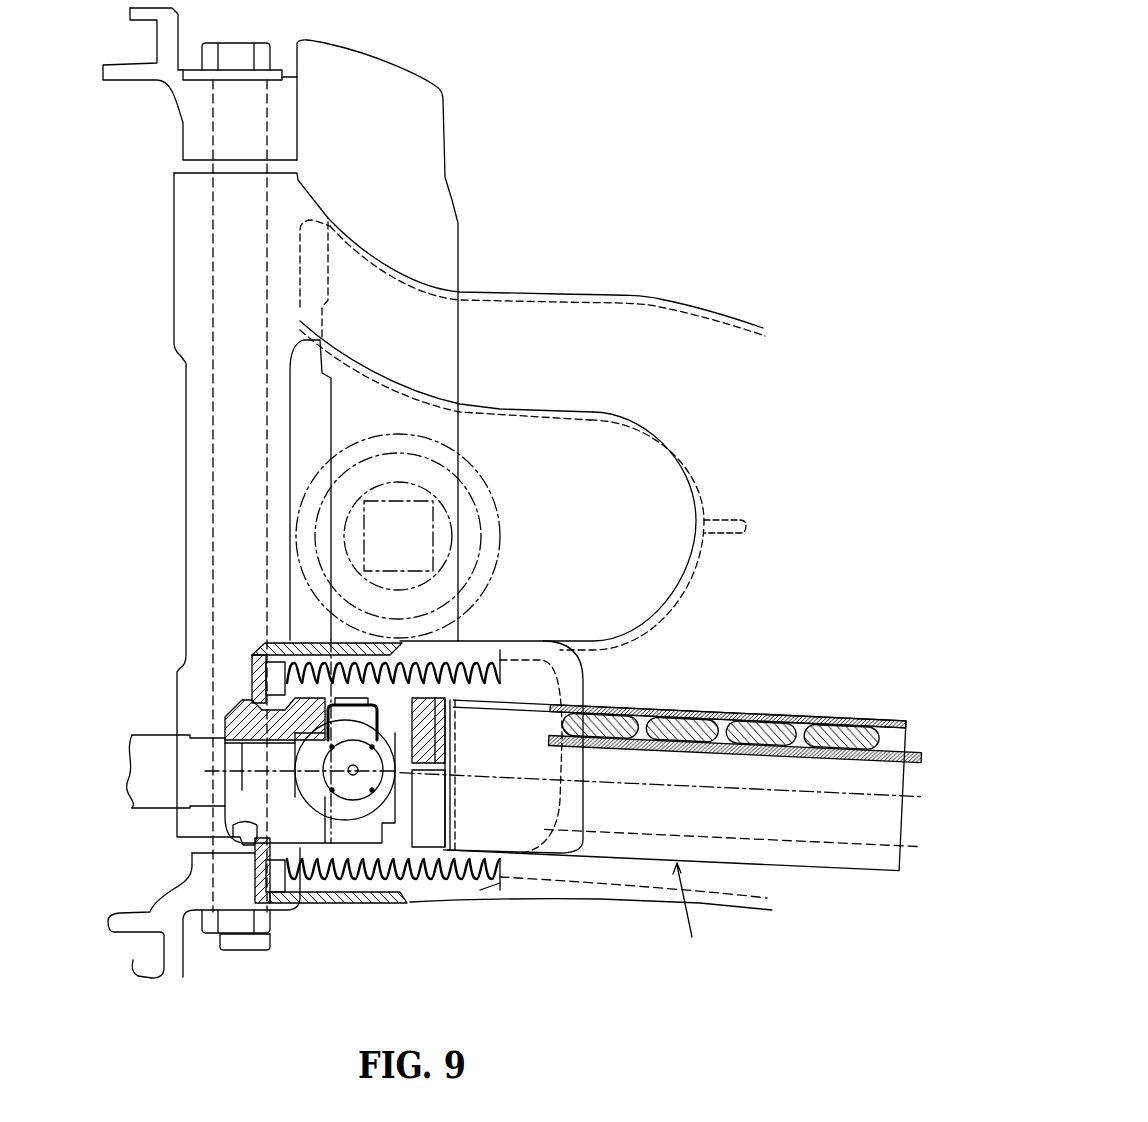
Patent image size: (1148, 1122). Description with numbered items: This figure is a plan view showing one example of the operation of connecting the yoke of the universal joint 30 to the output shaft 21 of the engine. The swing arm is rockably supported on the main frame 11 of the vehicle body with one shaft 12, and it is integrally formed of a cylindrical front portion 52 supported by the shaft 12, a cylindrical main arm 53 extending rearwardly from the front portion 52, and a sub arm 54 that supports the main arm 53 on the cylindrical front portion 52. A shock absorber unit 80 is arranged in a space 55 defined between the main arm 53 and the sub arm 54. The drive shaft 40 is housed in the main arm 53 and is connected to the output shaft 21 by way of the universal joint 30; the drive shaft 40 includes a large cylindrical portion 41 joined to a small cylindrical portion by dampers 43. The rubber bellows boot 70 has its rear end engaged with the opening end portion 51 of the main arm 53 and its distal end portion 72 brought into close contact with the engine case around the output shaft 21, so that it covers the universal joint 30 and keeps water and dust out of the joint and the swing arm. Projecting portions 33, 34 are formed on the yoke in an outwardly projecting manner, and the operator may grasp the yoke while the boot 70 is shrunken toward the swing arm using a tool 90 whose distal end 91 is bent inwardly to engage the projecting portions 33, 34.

The main frame 11 is at (370, 85).
The shaft 12 is at (208, 202).
The output shaft 21 is at (157, 747).
The universal joint 30 is at (400, 887).
The projecting portion 33 is at (237, 707).
The projecting portion 34 is at (247, 852).
The drive shaft 40 is at (691, 912).
The large cylindrical portion 41 is at (598, 860).
The dampers 43 is at (830, 723).
The end portion 51 is at (500, 855).
The cylindrical front portion 52 is at (178, 337).
The main arm 53 is at (735, 907).
The sub arm 54 is at (507, 298).
The space 55 is at (553, 467).
The boot 70 is at (515, 714).
The distal end portion 72 is at (280, 690).
The shock absorber unit 80 is at (438, 473).
The tool 90 is at (256, 643).
The distal end 91 is at (240, 700).